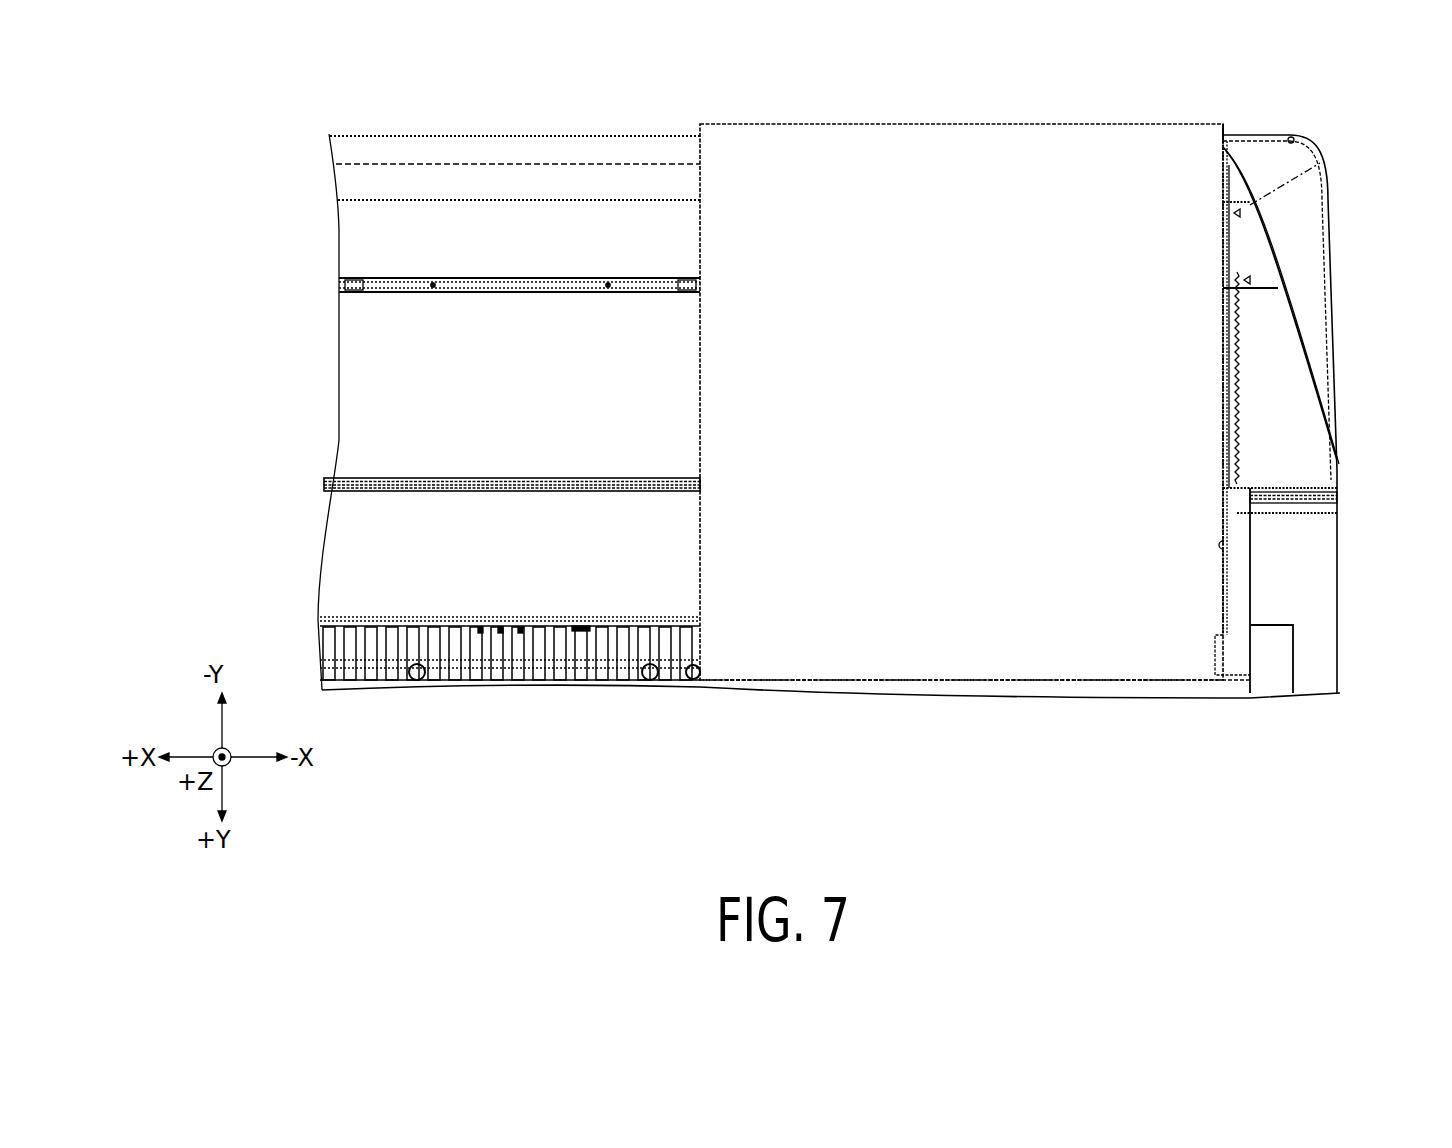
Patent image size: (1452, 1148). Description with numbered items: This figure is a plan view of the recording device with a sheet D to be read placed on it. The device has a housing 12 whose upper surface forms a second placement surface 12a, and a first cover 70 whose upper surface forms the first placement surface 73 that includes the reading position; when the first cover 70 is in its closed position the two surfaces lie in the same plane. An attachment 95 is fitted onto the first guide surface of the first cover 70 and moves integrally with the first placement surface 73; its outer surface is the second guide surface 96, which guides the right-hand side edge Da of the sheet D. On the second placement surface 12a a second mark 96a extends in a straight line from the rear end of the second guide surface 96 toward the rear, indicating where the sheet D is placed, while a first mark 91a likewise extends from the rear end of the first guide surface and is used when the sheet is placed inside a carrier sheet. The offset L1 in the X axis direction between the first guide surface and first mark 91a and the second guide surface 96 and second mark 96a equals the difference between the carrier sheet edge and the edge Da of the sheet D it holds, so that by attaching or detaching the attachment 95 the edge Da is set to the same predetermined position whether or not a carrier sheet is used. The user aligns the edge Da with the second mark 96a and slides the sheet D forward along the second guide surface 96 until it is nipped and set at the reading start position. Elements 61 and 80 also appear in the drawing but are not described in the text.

The sheet D is at (1030, 124).
The right-hand side edge of the sheet Da is at (1225, 124).
The housing 12 is at (1337, 397).
The second placement surface 12a is at (1287, 456).
The bottom plate 61 is at (935, 672).
The first cover 70 is at (1335, 457).
The first placement surface 73 is at (583, 662).
The stopper 80 is at (1270, 690).
The first mark 91a is at (1243, 323).
The attachment 95 is at (1237, 580).
The second guide surface 96 is at (1331, 408).
The second mark 96a is at (1230, 228).
The difference L1 is at (1205, 417).